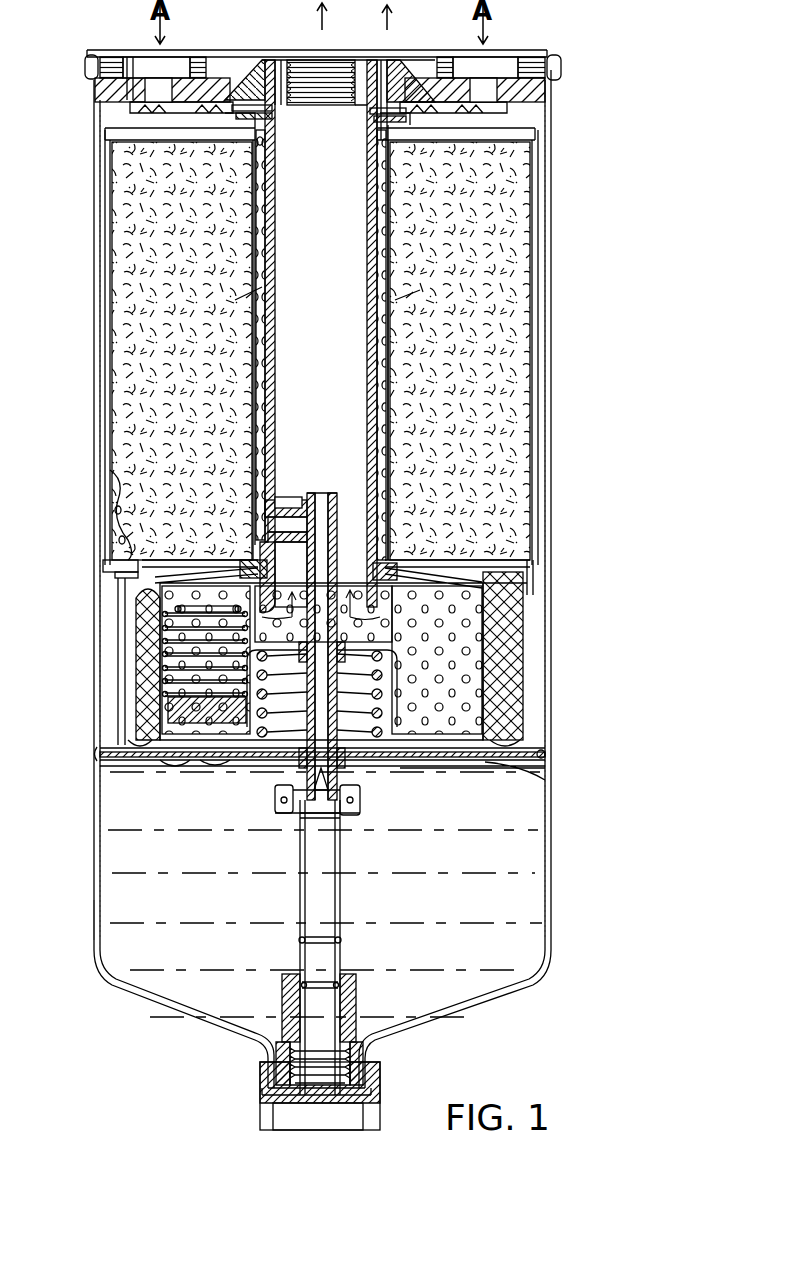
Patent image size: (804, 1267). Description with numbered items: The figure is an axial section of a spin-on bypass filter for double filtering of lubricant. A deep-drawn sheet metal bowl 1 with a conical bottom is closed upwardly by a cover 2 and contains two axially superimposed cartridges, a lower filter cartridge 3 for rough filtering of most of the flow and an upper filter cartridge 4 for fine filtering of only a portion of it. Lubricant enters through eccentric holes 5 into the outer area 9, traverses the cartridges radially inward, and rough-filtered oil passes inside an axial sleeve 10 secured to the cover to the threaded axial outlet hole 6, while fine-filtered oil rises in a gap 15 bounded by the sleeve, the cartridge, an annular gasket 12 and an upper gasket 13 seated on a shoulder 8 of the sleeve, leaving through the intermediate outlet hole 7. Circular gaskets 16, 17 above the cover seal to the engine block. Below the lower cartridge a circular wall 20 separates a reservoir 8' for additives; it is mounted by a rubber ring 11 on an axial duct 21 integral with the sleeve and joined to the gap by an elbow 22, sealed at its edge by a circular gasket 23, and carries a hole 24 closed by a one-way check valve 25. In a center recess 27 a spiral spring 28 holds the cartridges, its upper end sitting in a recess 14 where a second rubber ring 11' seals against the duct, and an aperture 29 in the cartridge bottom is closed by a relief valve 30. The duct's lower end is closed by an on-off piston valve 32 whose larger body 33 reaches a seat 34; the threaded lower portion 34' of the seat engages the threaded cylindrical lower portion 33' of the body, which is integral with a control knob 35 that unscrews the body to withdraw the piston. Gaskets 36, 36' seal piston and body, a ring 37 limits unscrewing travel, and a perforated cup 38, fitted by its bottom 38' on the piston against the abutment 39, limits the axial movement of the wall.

The bowl 1 is at (552, 410).
The cover 2 is at (110, 90).
The filter cartridge 3 is at (500, 644).
The filter cartridge 4 is at (510, 338).
The eccentric holes 5 is at (165, 95).
The axial outlet hole 6 is at (302, 78).
The intermediate outlet hole 7 is at (380, 100).
The shoulder 8 is at (319, 123).
The reservoir 8' is at (85, 947).
The outer area 9 is at (546, 236).
The axial sleeve 10 is at (274, 233).
The rubber ring 11 is at (497, 795).
The second rubber ring 11' is at (539, 573).
The annular gasket 12 is at (375, 568).
The upper gasket 13 is at (255, 150).
The recess 14 is at (395, 690).
The gap 15 is at (385, 402).
The circular gasket 16 is at (118, 62).
The circular gasket 17 is at (190, 100).
The circular wall 20 is at (485, 762).
The axial duct 21 is at (333, 520).
The elbow 22 is at (290, 508).
The circular gasket 23 is at (541, 750).
The hole 24 is at (130, 752).
The one-way check valve 25 is at (172, 762).
The center recess 27 is at (235, 770).
The spiral spring 28 is at (352, 646).
The aperture 29 is at (200, 705).
The relief valve 30 is at (170, 660).
The on-off piston valve 32 is at (342, 790).
The body 33 is at (349, 947).
The cylindrical lower portion 33' is at (275, 1069).
The seat 34 is at (343, 1008).
The lower portion 34' is at (359, 1061).
The control knob 35 is at (264, 1116).
The gasket 36 is at (417, 810).
The gasket 36' is at (247, 1035).
The ring 37 is at (300, 940).
The perforated cup 38 is at (216, 802).
The bottom 38' is at (280, 812).
The abutment 39 is at (310, 816).